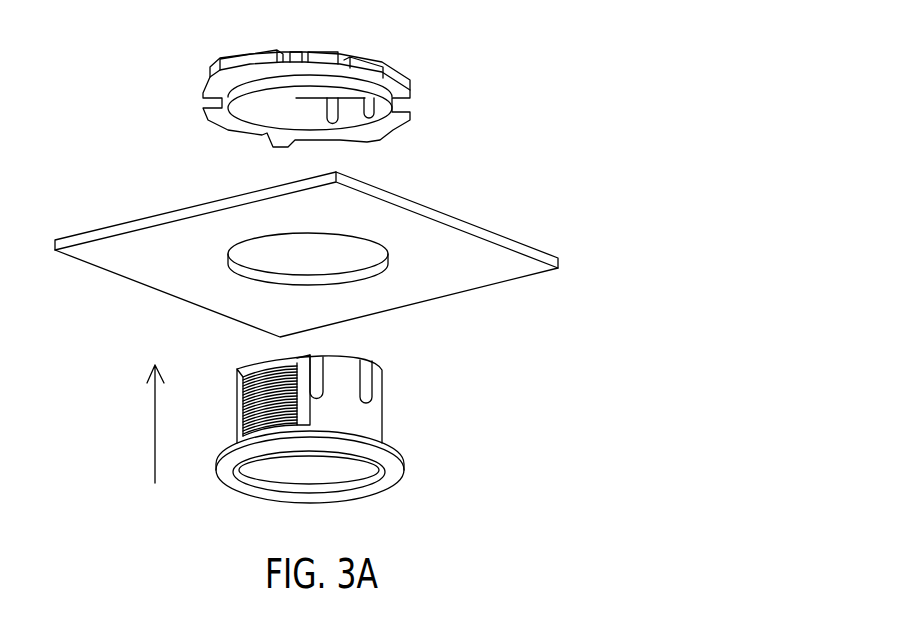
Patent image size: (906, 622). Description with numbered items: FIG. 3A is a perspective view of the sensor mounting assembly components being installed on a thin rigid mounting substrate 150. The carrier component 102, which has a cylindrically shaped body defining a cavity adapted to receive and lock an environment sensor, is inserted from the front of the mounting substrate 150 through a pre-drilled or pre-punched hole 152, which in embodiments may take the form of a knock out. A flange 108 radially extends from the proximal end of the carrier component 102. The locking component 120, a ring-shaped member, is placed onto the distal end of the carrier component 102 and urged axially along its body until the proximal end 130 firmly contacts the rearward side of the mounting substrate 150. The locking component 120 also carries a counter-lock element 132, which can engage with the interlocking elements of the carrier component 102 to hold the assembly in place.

The carrier component 102 is at (382, 412).
The flange 108 is at (402, 465).
The locking component 120 is at (408, 88).
The proximal end 130 is at (378, 137).
The counter-lock element 132 is at (350, 100).
The mounting substrate 150 is at (485, 227).
The hole 152 is at (269, 237).